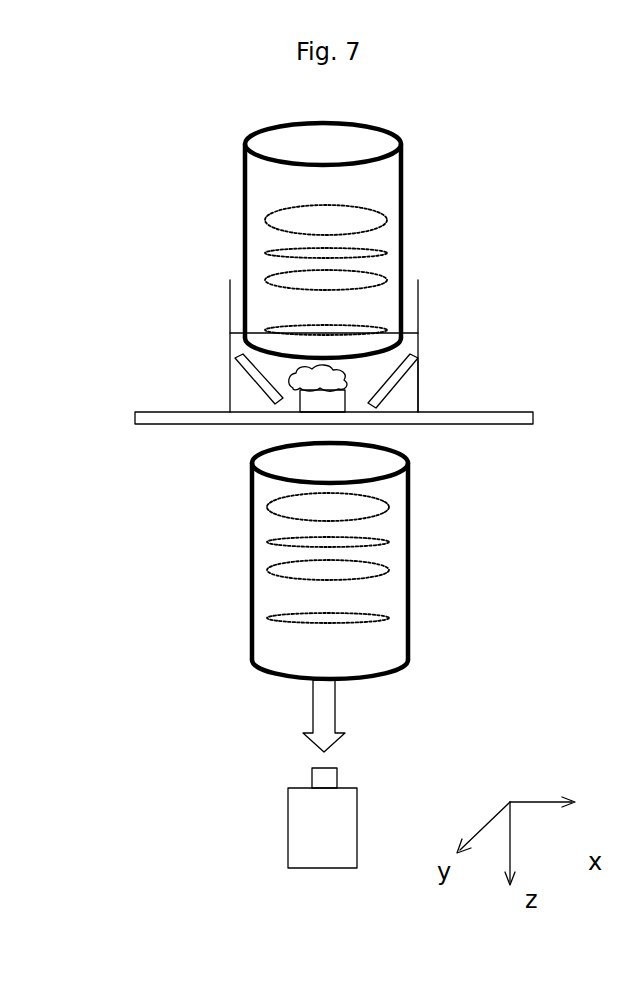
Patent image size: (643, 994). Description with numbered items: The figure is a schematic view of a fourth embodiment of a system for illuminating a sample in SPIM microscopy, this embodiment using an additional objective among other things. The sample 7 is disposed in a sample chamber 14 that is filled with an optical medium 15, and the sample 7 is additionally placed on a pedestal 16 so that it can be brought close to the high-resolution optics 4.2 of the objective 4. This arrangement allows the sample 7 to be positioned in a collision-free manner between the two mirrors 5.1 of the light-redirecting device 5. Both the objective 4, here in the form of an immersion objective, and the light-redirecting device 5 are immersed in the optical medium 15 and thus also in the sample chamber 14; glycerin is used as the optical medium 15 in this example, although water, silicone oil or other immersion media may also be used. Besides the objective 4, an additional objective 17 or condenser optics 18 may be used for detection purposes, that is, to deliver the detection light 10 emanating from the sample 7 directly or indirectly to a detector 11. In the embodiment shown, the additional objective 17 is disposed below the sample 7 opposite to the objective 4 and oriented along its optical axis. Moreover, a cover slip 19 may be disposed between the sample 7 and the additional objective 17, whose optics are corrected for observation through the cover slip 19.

The objective 4 is at (233, 228).
The high-resolution optics 4.2 is at (270, 298).
The light-redirecting device 5 is at (188, 449).
The mirrors 5.1 is at (240, 380).
The sample 7 is at (305, 380).
The detection light 10 is at (327, 715).
The detector 11 is at (300, 833).
The sample chamber 14 is at (422, 313).
The optical medium 15 is at (408, 392).
The pedestal 16 is at (322, 400).
The additional objective 17 is at (425, 592).
The condenser optics 18 is at (328, 558).
The cover slip 19 is at (500, 425).